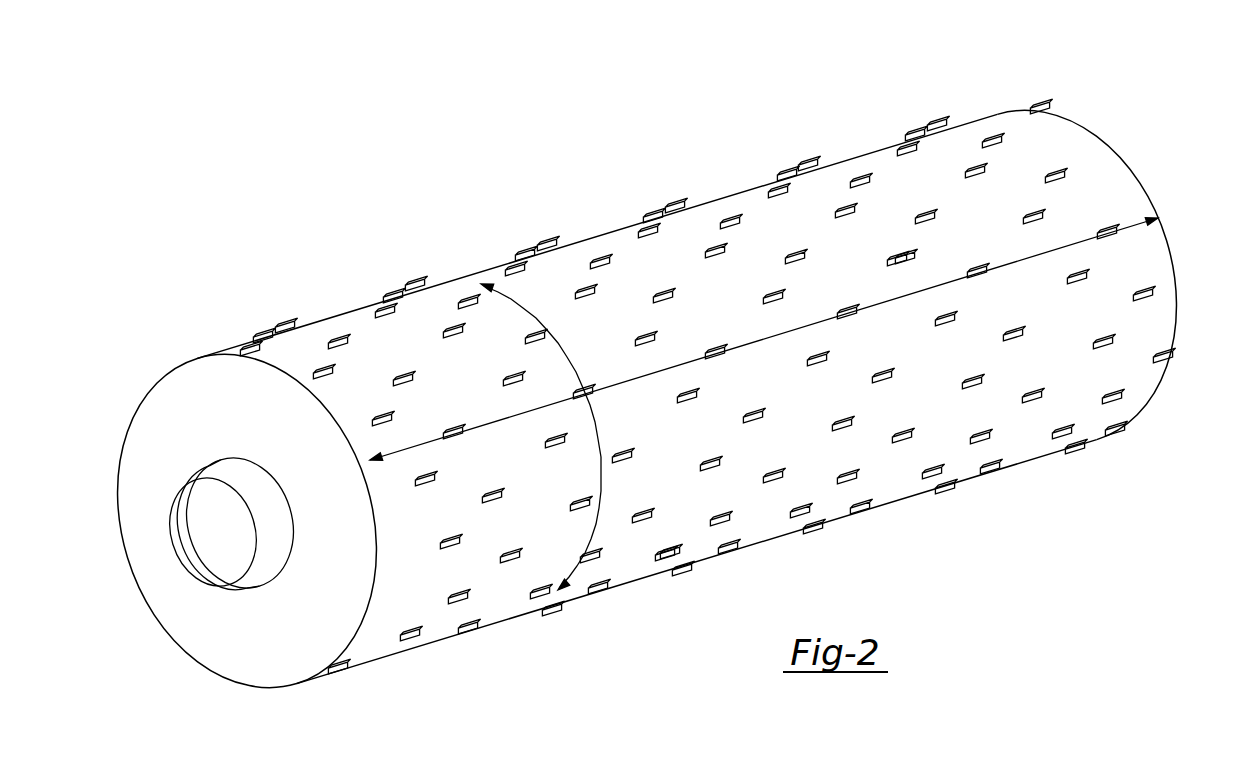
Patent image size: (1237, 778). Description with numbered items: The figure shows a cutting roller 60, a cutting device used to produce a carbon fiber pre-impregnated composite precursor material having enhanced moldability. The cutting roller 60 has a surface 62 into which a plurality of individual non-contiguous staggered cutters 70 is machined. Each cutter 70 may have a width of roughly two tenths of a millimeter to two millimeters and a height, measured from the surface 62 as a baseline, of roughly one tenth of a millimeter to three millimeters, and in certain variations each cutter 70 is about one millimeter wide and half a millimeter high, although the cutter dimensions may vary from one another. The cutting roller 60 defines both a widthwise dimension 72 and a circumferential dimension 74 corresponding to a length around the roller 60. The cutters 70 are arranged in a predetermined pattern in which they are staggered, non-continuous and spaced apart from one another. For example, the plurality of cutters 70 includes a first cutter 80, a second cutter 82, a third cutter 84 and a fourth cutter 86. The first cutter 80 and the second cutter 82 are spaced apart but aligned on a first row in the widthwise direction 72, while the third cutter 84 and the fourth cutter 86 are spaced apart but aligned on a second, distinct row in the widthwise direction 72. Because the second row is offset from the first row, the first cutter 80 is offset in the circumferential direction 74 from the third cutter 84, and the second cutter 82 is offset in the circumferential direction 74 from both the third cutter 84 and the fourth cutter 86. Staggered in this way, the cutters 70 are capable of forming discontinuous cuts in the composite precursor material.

The cutting roller 60 is at (326, 197).
The surface 62 is at (940, 177).
The non-contiguous staggered cutters 70 is at (733, 216).
The widthwise dimension 72 is at (1072, 245).
The circumferential dimension 74 is at (512, 298).
The first cutter 80 is at (591, 388).
The second cutter 82 is at (716, 348).
The third cutter 84 is at (680, 403).
The fourth cutter 86 is at (810, 364).